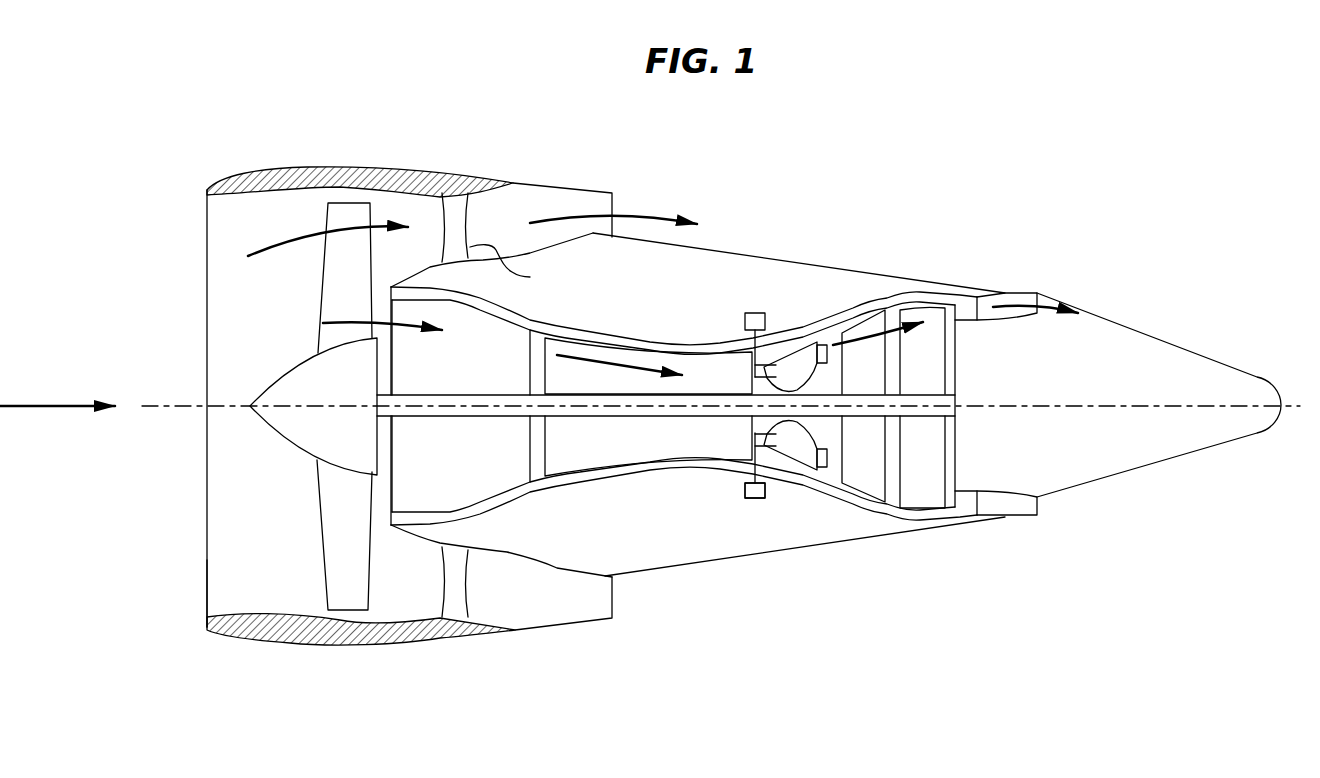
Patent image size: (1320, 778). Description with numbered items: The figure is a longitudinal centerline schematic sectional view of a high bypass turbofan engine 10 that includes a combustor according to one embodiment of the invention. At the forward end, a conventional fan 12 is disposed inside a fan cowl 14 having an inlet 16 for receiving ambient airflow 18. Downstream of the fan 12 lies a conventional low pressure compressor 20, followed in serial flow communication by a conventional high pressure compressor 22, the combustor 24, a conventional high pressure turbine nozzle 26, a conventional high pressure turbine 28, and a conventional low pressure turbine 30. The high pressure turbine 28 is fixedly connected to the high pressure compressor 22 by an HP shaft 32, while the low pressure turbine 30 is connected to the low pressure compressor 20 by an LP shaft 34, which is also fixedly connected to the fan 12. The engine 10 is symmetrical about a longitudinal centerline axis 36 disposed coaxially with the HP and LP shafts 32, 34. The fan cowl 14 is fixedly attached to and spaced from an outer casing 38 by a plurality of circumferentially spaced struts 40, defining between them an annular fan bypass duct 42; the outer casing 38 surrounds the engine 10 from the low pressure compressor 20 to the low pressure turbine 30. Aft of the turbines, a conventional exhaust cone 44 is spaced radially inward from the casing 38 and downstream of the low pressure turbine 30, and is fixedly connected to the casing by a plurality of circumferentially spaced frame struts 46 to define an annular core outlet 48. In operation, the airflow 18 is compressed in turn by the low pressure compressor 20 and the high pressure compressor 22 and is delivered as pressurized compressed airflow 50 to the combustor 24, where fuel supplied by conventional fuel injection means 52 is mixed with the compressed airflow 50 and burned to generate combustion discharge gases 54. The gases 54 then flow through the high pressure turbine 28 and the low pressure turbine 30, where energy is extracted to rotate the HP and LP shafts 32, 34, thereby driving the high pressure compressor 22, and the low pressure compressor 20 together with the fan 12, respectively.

The high bypass turbofan engine 10 is at (748, 232).
The fan 12 is at (326, 560).
The fan cowl 14 is at (357, 645).
The inlet 16 is at (207, 567).
The ambient airflow 18 is at (32, 410).
The low pressure compressor 20 is at (444, 471).
The high pressure compressor 22 is at (583, 460).
The combustor 24 is at (790, 450).
The high pressure turbine nozzle 26 is at (823, 483).
The high pressure turbine 28 is at (863, 482).
The low pressure turbine 30 is at (935, 468).
The HP shaft 32 is at (753, 397).
The LP shaft 34 is at (607, 398).
The longitudinal centerline axis 36 is at (1043, 405).
The outer casing 38 is at (868, 272).
The struts 40 is at (514, 266).
The fan bypass duct 42 is at (510, 223).
The exhaust cone 44 is at (1153, 350).
The frame struts 46 is at (967, 502).
The core outlet 48 is at (1040, 300).
The pressurized compressed airflow 50 is at (617, 360).
The fuel injection means 52 is at (743, 495).
The combustion discharge gases 54 is at (930, 366).